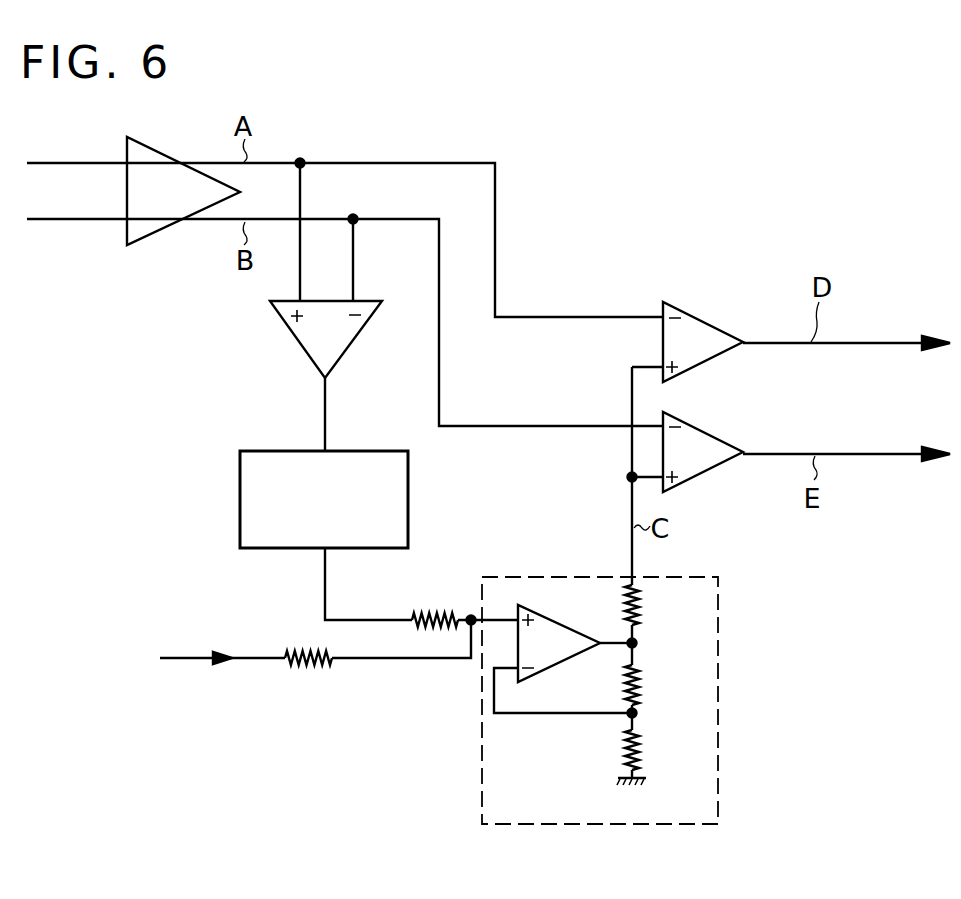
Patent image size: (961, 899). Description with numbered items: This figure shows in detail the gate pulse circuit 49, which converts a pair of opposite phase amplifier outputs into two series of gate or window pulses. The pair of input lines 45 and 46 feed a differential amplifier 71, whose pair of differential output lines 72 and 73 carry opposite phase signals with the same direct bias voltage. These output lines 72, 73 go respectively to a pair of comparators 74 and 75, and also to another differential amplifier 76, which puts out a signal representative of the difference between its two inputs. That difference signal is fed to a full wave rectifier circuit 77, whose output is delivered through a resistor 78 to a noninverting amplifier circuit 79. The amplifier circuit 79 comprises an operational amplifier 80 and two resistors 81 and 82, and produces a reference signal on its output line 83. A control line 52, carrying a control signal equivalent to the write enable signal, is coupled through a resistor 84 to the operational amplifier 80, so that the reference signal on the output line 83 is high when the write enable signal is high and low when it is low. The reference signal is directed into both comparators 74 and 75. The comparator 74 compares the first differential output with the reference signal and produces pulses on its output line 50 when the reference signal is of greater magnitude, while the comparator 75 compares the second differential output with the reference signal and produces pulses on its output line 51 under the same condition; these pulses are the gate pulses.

The input line 45 is at (56, 162).
The input line 46 is at (58, 222).
The gate pulse circuit 49 is at (893, 232).
The output line 50 is at (885, 342).
The output line 51 is at (880, 456).
The control line 52 is at (178, 660).
The differential amplifier 71 is at (178, 222).
The differential output line 72 is at (354, 161).
The differential output line 73 is at (393, 222).
The comparator 74 is at (712, 322).
The comparator 75 is at (736, 461).
The differential amplifier 76 is at (345, 352).
The full wave rectifier circuit 77 is at (410, 497).
The resistor 78 is at (429, 614).
The noninverting amplifier circuit 79 is at (718, 722).
The operational amplifier 80 is at (566, 629).
The resistor 81 is at (640, 690).
The resistor 82 is at (640, 605).
The output line 83 is at (632, 515).
The resistor 84 is at (310, 668).